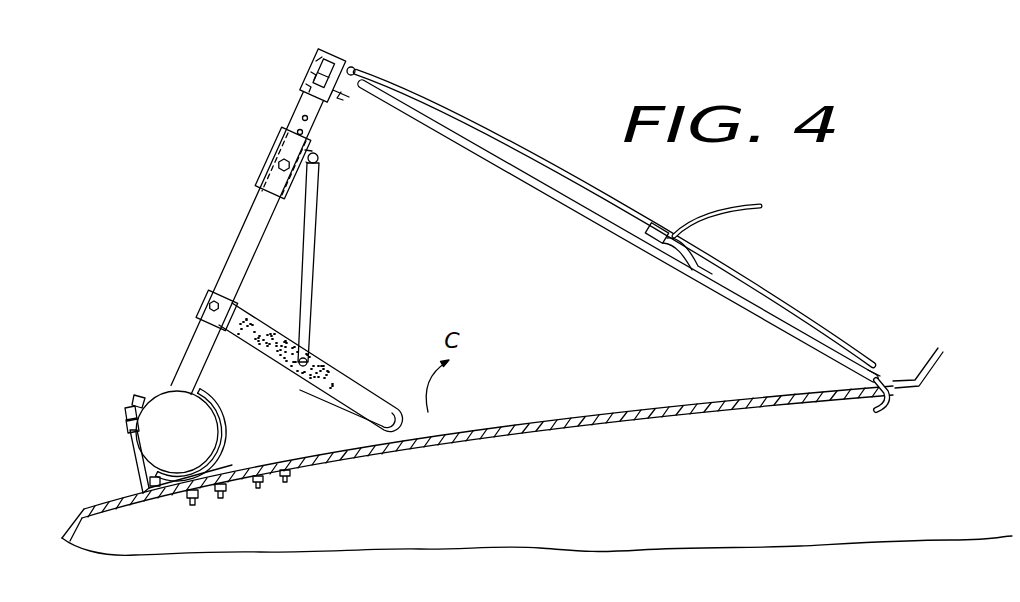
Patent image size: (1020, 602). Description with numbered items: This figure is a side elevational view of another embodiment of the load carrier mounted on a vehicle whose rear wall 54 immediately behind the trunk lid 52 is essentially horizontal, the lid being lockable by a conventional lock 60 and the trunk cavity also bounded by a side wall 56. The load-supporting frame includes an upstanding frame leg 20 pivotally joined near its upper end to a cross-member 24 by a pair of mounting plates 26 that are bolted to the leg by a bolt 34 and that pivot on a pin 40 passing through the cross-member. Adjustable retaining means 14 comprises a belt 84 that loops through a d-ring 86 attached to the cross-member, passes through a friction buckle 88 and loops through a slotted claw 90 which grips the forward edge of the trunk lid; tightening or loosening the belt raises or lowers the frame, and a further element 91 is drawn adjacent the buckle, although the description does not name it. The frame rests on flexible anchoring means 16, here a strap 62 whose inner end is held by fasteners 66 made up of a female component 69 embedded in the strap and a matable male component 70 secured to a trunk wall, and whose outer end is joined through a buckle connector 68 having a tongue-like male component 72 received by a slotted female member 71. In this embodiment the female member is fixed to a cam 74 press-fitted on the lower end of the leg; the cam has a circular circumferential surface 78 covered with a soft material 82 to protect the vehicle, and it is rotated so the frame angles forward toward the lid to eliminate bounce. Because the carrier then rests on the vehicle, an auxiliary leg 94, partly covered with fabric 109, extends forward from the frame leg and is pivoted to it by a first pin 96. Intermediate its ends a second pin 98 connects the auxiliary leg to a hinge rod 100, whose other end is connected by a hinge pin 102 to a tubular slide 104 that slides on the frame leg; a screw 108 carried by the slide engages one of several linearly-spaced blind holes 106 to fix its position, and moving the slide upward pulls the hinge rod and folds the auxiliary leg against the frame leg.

The retaining means 14 is at (783, 296).
The flexible anchoring means 16 is at (132, 471).
The frame leg 20 is at (233, 246).
The cross-member 24 is at (335, 57).
The mounting plates 26 is at (318, 61).
The bolt 34 is at (308, 86).
The pin 40 is at (320, 58).
The trunk lid 52 is at (667, 403).
The rear wall 54 is at (72, 516).
The side wall 56 is at (537, 515).
The lock 60 is at (157, 487).
The strap 62 is at (146, 493).
The fasteners 66 is at (223, 498).
The buckle connector 68 is at (125, 412).
The female component 69 is at (192, 499).
The male components 70 is at (221, 477).
The slotted female member 71 is at (128, 427).
The male component 72 is at (137, 396).
The cam 74 is at (207, 424).
The circumferential surface 78 is at (197, 393).
The soft material 82 is at (212, 403).
The belt 84 is at (757, 287).
The d-ring 86 is at (357, 66).
The friction buckle 88 is at (652, 232).
The slotted claw 90 is at (890, 400).
The spring wire 91 is at (707, 220).
The auxiliary leg 94 is at (367, 383).
The first pin 96 is at (204, 310).
The second pin 98 is at (307, 359).
The hinge rod 100 is at (317, 239).
The hinge pin 102 is at (318, 162).
The tubular slide 104 is at (264, 178).
The blind holes 106 is at (297, 132).
The screw 108 is at (278, 163).
The fabric 109 is at (232, 338).